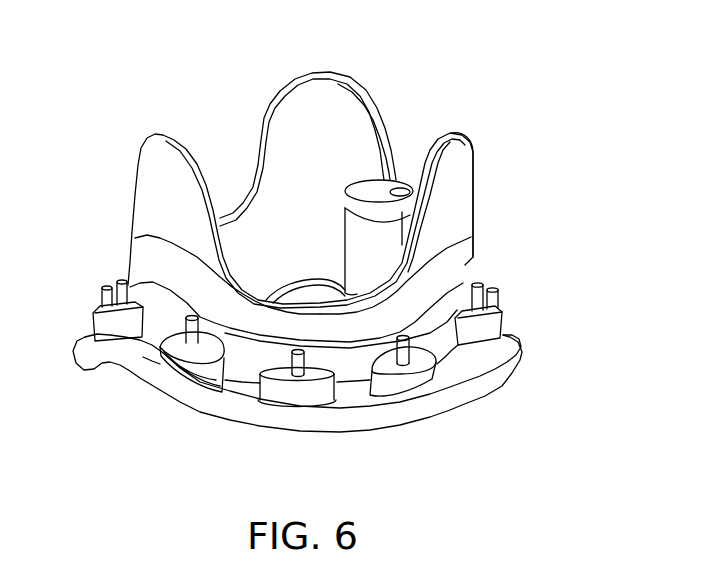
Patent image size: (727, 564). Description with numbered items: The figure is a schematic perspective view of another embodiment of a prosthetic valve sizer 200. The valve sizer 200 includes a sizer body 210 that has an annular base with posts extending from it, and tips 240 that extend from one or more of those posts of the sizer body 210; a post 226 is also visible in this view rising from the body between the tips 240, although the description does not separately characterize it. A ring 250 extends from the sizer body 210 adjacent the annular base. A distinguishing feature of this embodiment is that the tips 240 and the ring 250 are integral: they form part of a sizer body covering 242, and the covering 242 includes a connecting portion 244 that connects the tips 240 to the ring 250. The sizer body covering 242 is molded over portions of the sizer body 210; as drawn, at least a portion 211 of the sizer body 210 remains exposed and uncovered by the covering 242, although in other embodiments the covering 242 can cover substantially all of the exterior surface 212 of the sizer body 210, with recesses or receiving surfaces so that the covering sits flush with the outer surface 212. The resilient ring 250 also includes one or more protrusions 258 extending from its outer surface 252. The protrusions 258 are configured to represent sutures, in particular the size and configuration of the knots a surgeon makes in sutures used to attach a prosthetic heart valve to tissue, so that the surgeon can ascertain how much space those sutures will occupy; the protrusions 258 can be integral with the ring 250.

The valve sizer 200 is at (432, 44).
The sizer body 210 is at (133, 272).
The portion of the sizer body 211 is at (395, 315).
The exterior surface of the sizer body 212 is at (458, 265).
The post 226 is at (399, 182).
The tips 240 is at (473, 170).
The sizer body covering 242 is at (137, 183).
The connecting portion 244 is at (292, 117).
The ring 250 is at (483, 352).
The outer surface of the ring 252 is at (245, 393).
The protrusions 258 is at (160, 345).